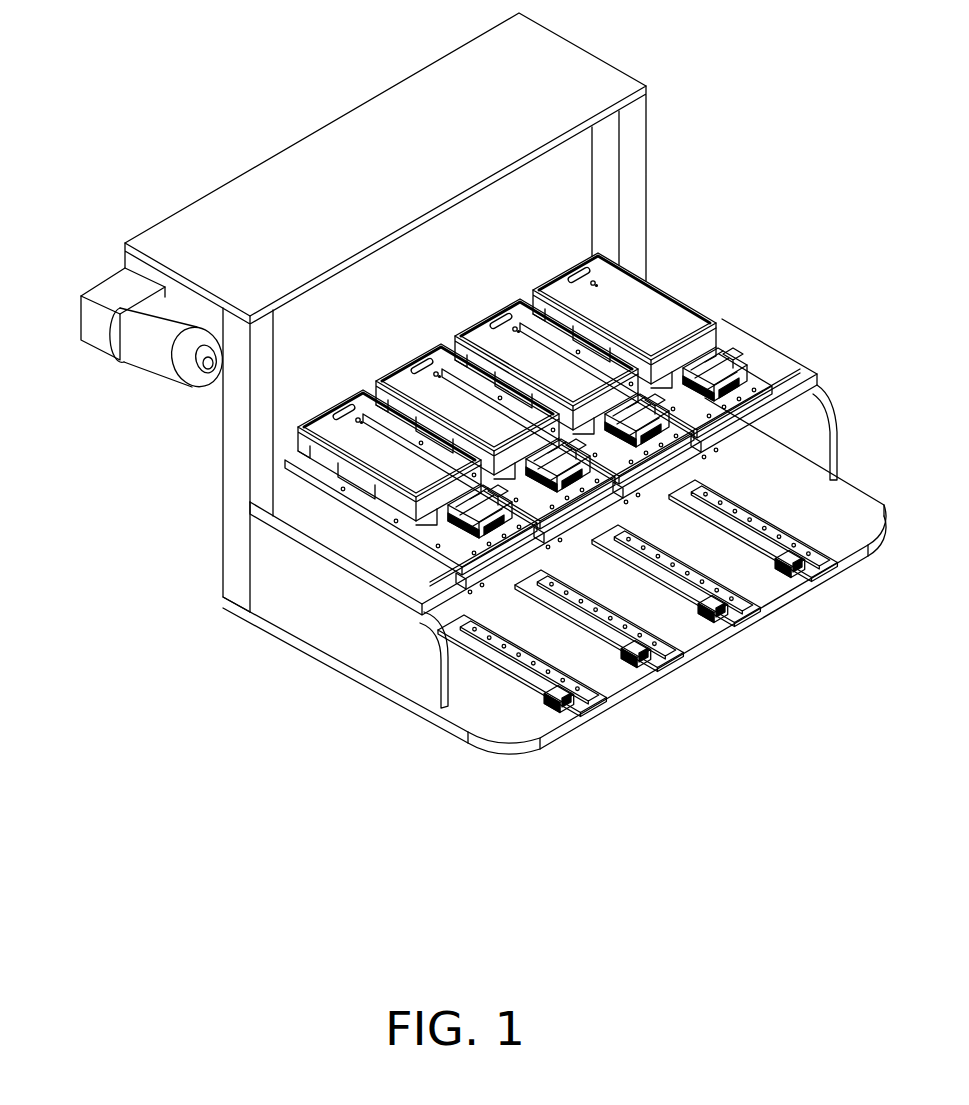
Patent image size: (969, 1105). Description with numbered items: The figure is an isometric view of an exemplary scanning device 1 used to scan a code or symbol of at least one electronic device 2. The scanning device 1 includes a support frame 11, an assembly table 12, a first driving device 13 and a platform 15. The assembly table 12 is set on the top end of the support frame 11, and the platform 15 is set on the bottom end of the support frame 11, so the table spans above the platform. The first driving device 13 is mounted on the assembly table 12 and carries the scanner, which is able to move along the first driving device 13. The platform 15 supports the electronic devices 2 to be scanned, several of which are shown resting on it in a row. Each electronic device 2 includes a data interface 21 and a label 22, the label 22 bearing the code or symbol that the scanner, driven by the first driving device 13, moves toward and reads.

The scanning device 1 is at (312, 34).
The support frame 11 is at (232, 488).
The assembly table 12 is at (331, 143).
The first driving device 13 is at (102, 333).
The platform 15 is at (413, 583).
The electronic device 2 is at (645, 295).
The data interface 21 is at (680, 330).
The label 22 is at (603, 262).